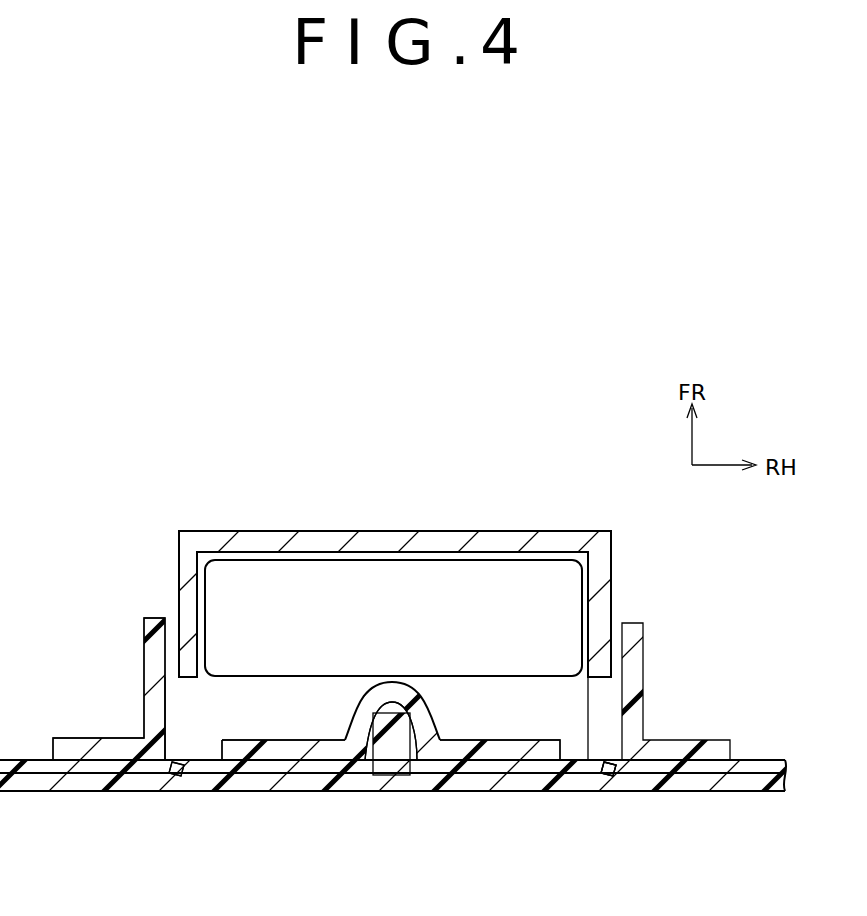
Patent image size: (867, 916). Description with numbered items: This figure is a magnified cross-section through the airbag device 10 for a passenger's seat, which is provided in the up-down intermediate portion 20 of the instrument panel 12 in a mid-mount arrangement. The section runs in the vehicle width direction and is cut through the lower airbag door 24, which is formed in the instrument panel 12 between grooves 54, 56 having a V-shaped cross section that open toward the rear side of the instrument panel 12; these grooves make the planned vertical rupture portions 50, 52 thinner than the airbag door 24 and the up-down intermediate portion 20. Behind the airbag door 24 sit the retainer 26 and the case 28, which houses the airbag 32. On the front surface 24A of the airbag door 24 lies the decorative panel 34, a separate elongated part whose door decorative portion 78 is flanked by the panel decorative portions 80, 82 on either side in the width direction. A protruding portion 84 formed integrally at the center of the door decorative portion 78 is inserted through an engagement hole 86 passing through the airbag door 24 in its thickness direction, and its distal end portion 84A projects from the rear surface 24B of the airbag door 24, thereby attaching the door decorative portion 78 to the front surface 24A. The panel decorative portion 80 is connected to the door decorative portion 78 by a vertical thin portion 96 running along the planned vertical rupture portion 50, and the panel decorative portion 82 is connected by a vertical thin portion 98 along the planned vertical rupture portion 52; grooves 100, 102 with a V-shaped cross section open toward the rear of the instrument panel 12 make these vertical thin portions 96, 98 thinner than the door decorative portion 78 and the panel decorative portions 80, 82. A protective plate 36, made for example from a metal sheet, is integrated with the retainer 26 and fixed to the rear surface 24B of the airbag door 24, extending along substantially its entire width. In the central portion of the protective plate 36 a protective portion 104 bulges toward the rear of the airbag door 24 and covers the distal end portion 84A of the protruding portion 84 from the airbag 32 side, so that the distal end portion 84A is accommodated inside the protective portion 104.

The airbag device for a passenger's seat 10 is at (397, 463).
The instrument panel 12 is at (767, 762).
The up-down intermediate portion 20 is at (392, 775).
The airbag door 24 is at (483, 793).
The front surface of the airbag door 24A is at (392, 766).
The rear surface of the airbag door 24B is at (308, 757).
The retainer 26 is at (690, 740).
The case 28 is at (612, 570).
The airbag 32 is at (470, 680).
The decorative panel 34 is at (752, 795).
The protective plate 36 is at (288, 740).
The planned vertical rupture portion 50 is at (625, 785).
The planned vertical rupture portion 52 is at (158, 792).
The groove 54 is at (605, 760).
The groove 56 is at (173, 760).
The door decorative portion 78 is at (335, 793).
The panel decorative portion 80 is at (710, 793).
The panel decorative portion 82 is at (72, 792).
The protruding portion 84 is at (398, 700).
The distal end portion of the protruding portion 84A is at (391, 731).
The engagement hole 86 is at (388, 793).
The vertical thin portion 96 is at (613, 793).
The vertical thin portion 98 is at (177, 785).
The groove 100 is at (605, 770).
The groove 102 is at (187, 767).
The protective portion 104 is at (350, 688).